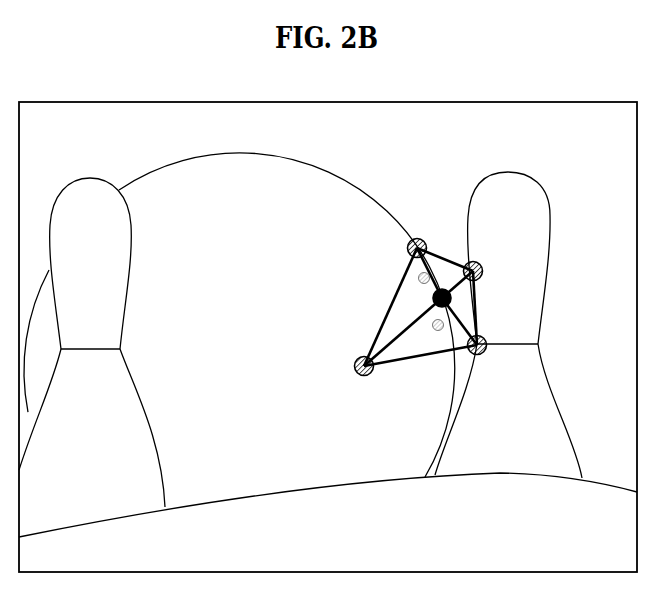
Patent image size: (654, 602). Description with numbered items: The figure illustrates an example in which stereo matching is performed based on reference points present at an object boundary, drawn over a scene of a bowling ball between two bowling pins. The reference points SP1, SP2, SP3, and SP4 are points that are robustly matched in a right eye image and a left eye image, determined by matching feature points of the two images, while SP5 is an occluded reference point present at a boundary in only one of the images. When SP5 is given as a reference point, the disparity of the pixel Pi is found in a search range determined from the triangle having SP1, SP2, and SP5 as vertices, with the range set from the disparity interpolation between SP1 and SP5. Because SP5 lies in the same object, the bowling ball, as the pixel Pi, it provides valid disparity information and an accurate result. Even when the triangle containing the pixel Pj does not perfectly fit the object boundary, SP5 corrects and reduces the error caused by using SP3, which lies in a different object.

The reference point SP1 is at (427, 234).
The reference point SP2 is at (344, 359).
The reference point SP3 is at (495, 269).
The reference point SP4 is at (497, 357).
The occluded reference point SP5 is at (465, 304).
The pixel Pi is at (418, 290).
The pixel Pj is at (431, 335).